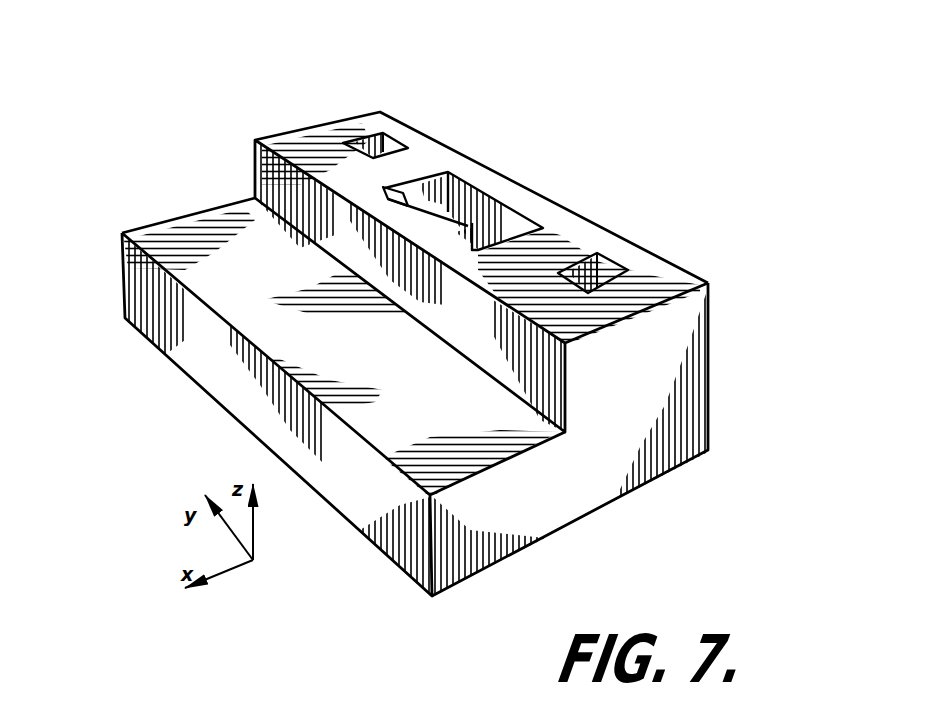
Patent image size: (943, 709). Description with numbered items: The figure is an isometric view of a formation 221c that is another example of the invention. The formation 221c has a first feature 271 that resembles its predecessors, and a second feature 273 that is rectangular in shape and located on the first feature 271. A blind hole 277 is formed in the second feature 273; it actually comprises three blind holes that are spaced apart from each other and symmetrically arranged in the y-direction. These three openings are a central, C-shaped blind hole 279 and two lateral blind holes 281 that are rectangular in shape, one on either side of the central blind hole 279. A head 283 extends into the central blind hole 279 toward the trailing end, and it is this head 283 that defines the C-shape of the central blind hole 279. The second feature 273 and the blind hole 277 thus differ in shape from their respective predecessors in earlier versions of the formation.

The formation 221c is at (192, 145).
The first feature 271 is at (378, 515).
The second feature 273 is at (667, 277).
The blind hole 277 is at (610, 247).
The central C-shaped blind hole 279 is at (508, 223).
The lateral blind holes 281 is at (372, 142).
The head 283 is at (383, 187).